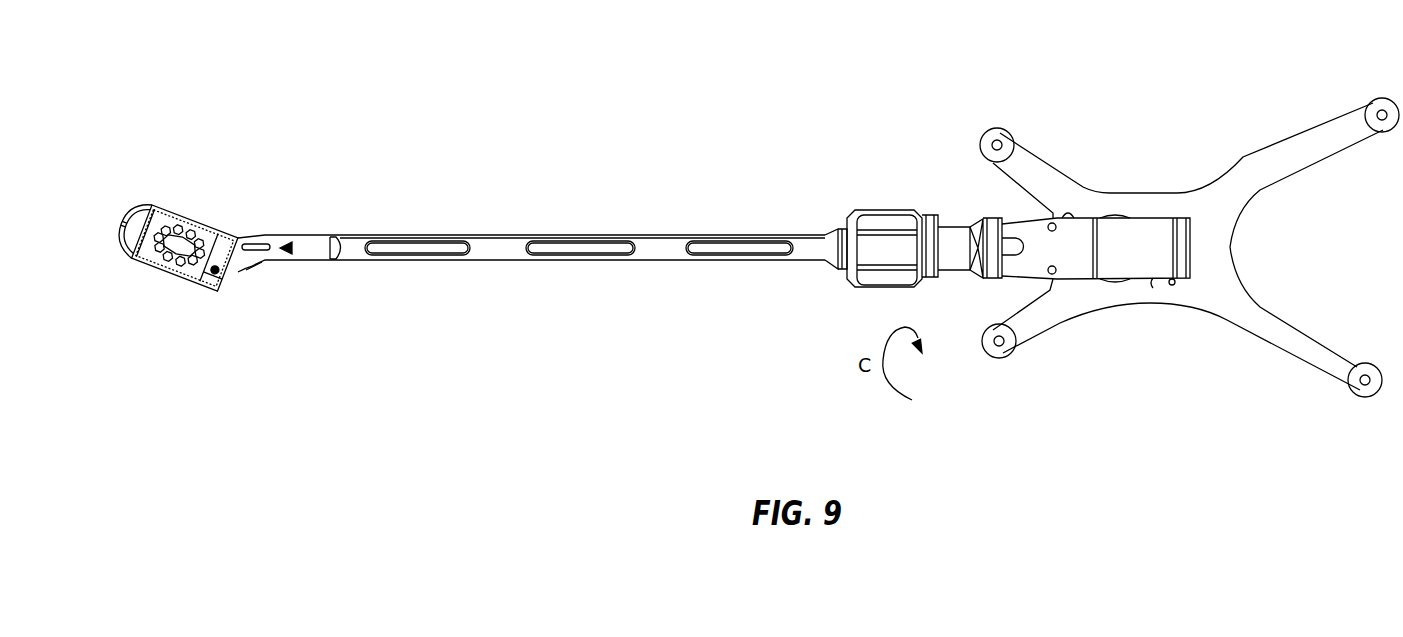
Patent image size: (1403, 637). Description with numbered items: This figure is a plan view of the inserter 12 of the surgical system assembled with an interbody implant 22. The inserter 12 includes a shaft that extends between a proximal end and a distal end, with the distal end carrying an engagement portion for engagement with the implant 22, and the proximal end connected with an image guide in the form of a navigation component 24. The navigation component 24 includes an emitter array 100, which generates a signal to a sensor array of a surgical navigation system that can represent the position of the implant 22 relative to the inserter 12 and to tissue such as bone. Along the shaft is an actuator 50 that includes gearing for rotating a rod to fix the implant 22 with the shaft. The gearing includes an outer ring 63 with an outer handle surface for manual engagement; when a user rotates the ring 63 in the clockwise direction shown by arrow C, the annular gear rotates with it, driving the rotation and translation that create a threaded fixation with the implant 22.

The interbody implant 22 is at (150, 183).
The inserter 12 is at (372, 200).
The actuator 50 is at (845, 185).
The outer ring 63 is at (882, 237).
The navigation component 24 is at (1088, 195).
The emitter array 100 is at (1292, 70).